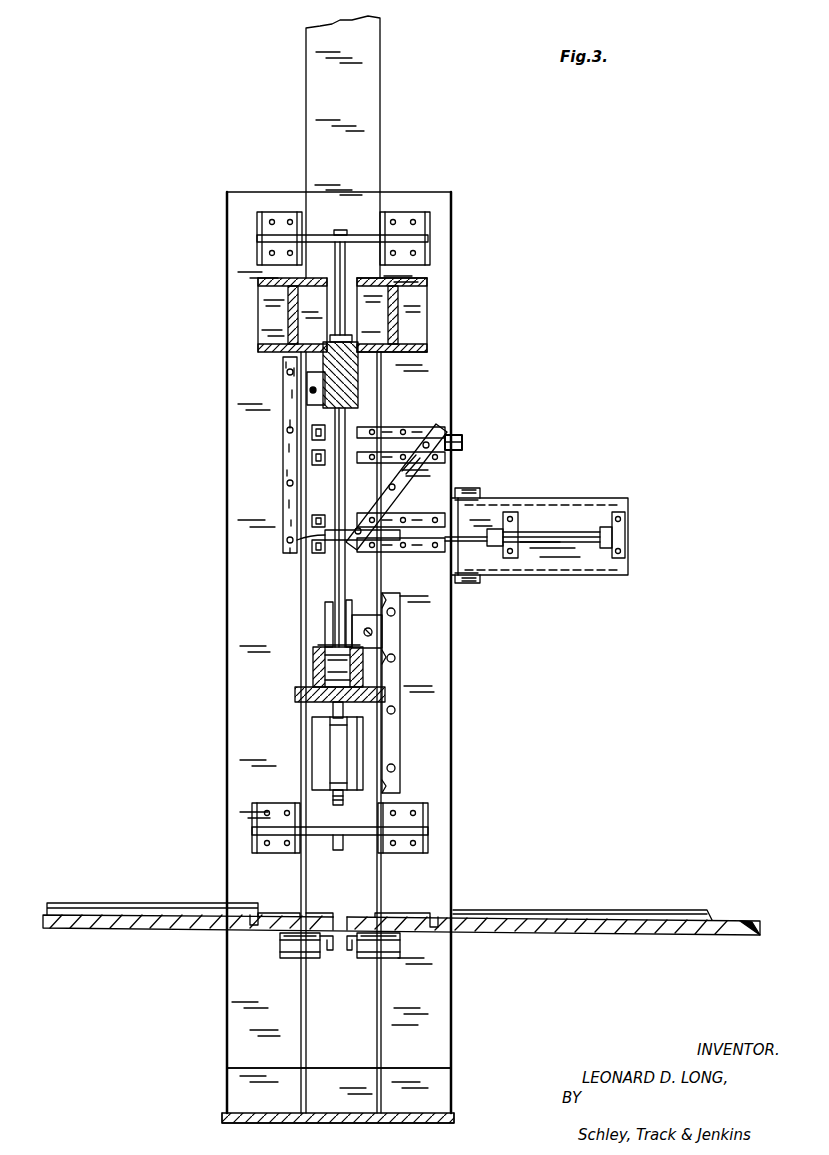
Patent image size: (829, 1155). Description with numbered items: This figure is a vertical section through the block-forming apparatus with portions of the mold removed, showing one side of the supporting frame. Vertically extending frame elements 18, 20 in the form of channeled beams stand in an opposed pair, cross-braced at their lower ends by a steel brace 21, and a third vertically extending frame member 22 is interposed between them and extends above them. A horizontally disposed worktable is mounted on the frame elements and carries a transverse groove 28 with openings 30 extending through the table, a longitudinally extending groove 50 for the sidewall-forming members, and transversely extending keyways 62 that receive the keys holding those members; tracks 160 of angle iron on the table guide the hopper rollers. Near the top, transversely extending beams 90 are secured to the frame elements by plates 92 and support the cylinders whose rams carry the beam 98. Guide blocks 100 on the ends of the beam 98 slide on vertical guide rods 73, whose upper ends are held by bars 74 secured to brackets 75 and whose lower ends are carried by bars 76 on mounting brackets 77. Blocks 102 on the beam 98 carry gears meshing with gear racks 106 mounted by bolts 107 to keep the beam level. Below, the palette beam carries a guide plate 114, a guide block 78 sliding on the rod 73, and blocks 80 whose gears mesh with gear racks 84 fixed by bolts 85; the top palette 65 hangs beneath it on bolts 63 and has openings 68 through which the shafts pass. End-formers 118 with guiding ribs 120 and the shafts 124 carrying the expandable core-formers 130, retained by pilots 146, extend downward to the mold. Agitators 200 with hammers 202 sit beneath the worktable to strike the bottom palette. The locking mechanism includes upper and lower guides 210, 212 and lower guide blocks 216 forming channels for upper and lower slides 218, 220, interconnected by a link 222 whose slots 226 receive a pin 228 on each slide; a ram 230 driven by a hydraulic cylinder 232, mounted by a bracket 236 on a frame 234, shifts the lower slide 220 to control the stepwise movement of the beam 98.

The frame element 18 is at (228, 700).
The frame element 20 is at (443, 400).
The steel brace 21 is at (398, 1078).
The frame member 22 is at (374, 160).
The groove 28 is at (314, 916).
The openings 30 is at (345, 917).
The longitudinally extending groove 50 is at (282, 915).
The keyways 62 is at (253, 915).
The bolts 63 is at (362, 662).
The top palette 65 is at (385, 692).
The openings 68 is at (313, 665).
The guide rods 73 is at (341, 603).
The bars 74 is at (350, 235).
The brackets 75 is at (273, 218).
The bars 76 is at (356, 838).
The mounting brackets 77 is at (276, 845).
The guide block 78 is at (328, 622).
The blocks 80 is at (383, 632).
The gear racks 84 is at (400, 722).
The bolts 85 is at (396, 770).
The beams 90 is at (396, 322).
The plates 92 is at (410, 300).
The beam 98 is at (358, 380).
The guide block 100 is at (352, 340).
The blocks 102 is at (307, 390).
The gear racks 106 is at (285, 458).
The bolts 107 is at (287, 432).
The guide plate 114 is at (326, 645).
The end-formers 118 is at (320, 738).
The ribs 120 is at (312, 760).
The shafts 124 is at (350, 607).
The core-formers 130 is at (340, 768).
The pilots 146 is at (333, 798).
The tracks 160 is at (115, 896).
The agitators 200 is at (370, 958).
The hammers 202 is at (325, 958).
The upper guides 210 is at (446, 430).
The lower guides 212 is at (423, 520).
The lower guide blocks 216 is at (312, 520).
The upper slides 218 is at (462, 446).
The lower slides 220 is at (300, 545).
The links 222 is at (412, 478).
The slots 226 is at (362, 518).
The pin 228 is at (458, 437).
The rams 230 is at (470, 575).
The hydraulic cylinders 232 is at (545, 532).
The frames 234 is at (512, 512).
The brackets 236 is at (628, 505).